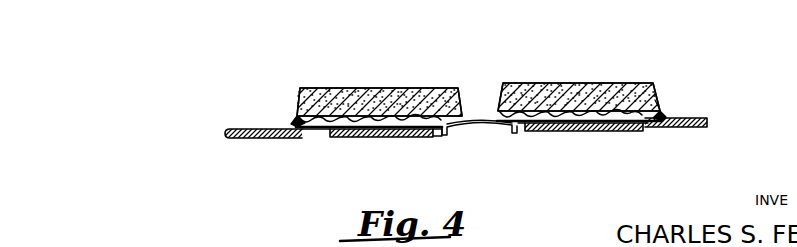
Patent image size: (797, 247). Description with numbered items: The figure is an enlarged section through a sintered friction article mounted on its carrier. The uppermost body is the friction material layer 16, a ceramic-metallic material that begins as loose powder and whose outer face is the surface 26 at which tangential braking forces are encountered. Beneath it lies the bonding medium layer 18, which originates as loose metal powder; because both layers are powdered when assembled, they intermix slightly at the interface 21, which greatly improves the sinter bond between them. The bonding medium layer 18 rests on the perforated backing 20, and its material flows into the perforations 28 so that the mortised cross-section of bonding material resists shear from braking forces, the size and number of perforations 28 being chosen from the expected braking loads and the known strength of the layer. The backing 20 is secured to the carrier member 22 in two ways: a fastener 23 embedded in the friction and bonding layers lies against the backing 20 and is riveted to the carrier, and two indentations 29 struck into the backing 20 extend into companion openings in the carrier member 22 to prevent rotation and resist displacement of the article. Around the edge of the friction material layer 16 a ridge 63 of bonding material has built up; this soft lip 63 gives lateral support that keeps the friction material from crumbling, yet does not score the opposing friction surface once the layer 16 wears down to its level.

The friction material layer 16 is at (320, 100).
The bonding medium layer 18 is at (663, 107).
The perforated backing 20 is at (313, 133).
The interface 21 is at (560, 107).
The carrier member 22 is at (229, 140).
The fastener 23 is at (480, 120).
The surface 26 is at (413, 88).
The perforations 28 is at (352, 138).
The indentations 29 is at (325, 127).
The ridge 63 is at (297, 118).